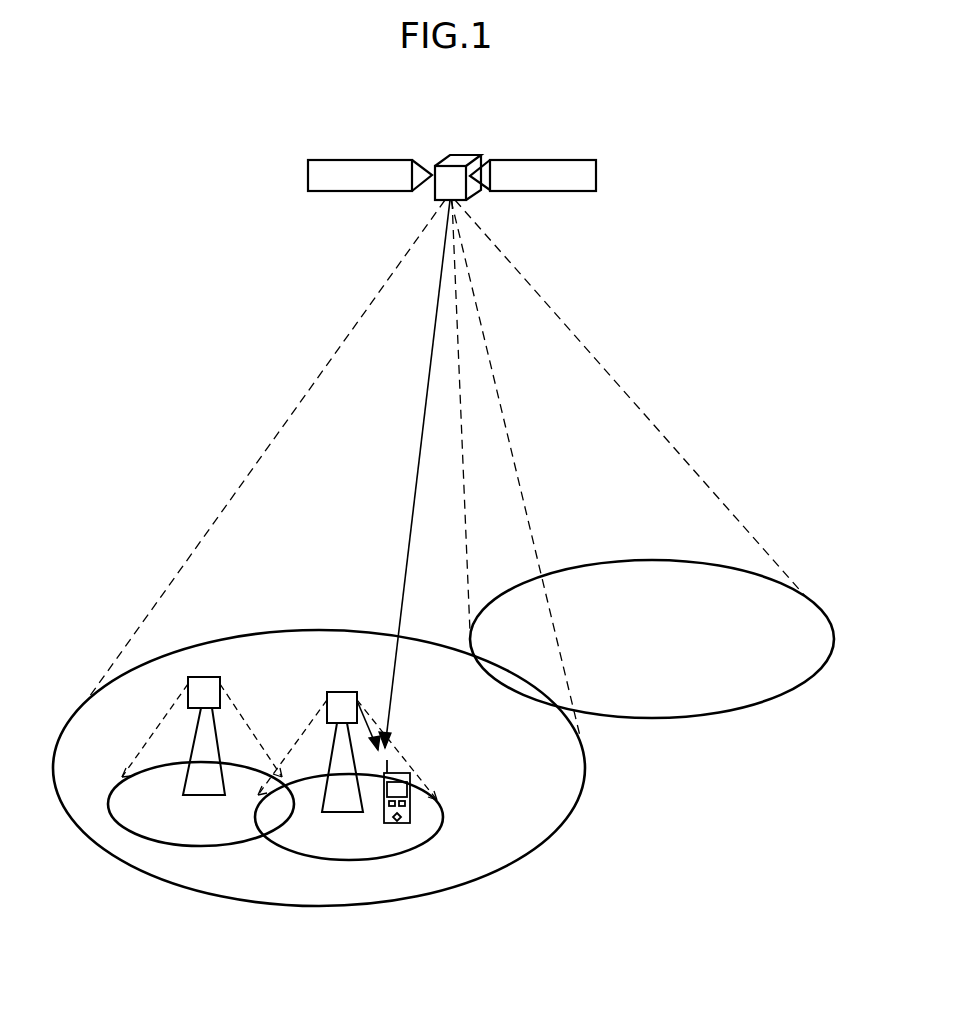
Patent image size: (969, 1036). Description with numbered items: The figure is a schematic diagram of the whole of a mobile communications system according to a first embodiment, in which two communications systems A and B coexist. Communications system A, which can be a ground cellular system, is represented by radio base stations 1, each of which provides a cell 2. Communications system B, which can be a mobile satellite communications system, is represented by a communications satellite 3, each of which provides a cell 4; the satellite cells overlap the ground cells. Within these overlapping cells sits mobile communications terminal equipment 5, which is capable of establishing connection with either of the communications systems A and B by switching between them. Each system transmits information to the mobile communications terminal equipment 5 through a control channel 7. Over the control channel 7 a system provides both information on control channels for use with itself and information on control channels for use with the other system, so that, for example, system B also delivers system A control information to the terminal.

The radio base station 1 is at (330, 692).
The cell 2 is at (298, 846).
The communications satellite 3 is at (458, 158).
The cell 4 is at (680, 708).
The mobile communications terminal equipment 5 is at (410, 803).
The control channel 7 is at (377, 722).